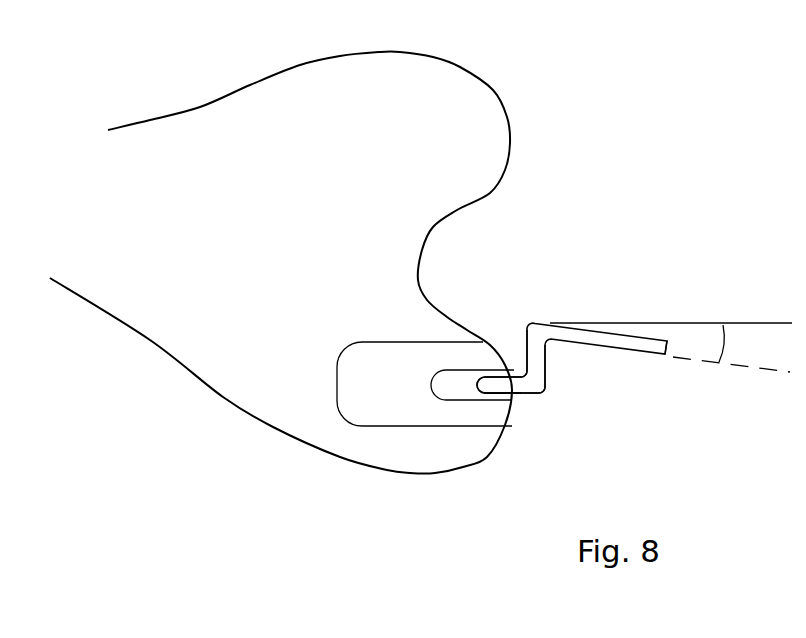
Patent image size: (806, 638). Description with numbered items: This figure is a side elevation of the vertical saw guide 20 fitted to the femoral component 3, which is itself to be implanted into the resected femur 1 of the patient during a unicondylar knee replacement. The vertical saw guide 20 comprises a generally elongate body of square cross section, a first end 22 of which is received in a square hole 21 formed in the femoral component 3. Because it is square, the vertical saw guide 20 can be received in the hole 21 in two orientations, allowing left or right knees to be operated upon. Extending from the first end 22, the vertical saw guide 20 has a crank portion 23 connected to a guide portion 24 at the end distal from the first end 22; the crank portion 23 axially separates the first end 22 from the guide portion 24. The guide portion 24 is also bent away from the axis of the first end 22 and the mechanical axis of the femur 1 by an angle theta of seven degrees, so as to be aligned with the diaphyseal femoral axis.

The femur 1 is at (377, 457).
The femoral component 3 is at (485, 347).
The vertical saw guide 20 is at (600, 330).
The square hole 21 is at (495, 400).
The first end 22 is at (473, 388).
The crank portion 23 is at (545, 375).
The guide portion 24 is at (650, 357).